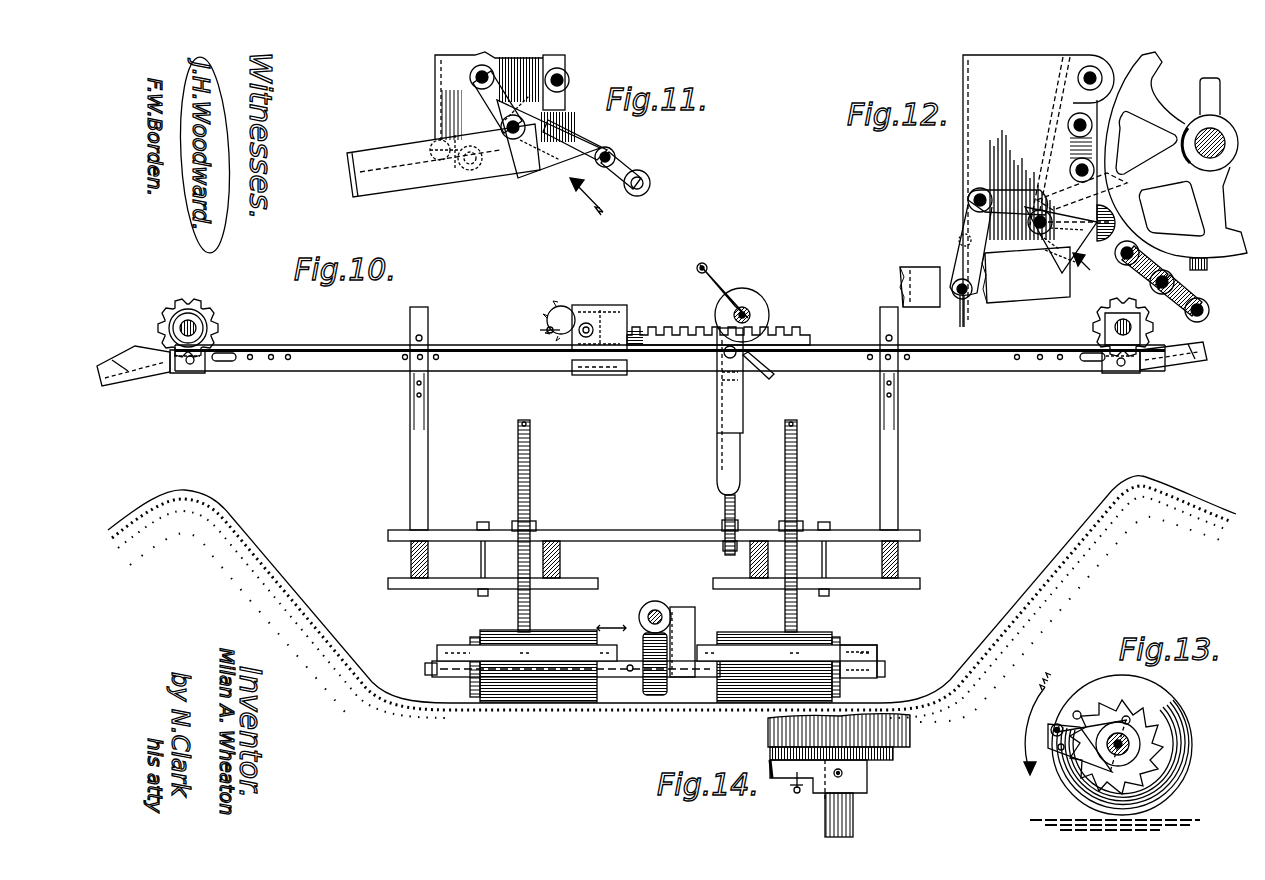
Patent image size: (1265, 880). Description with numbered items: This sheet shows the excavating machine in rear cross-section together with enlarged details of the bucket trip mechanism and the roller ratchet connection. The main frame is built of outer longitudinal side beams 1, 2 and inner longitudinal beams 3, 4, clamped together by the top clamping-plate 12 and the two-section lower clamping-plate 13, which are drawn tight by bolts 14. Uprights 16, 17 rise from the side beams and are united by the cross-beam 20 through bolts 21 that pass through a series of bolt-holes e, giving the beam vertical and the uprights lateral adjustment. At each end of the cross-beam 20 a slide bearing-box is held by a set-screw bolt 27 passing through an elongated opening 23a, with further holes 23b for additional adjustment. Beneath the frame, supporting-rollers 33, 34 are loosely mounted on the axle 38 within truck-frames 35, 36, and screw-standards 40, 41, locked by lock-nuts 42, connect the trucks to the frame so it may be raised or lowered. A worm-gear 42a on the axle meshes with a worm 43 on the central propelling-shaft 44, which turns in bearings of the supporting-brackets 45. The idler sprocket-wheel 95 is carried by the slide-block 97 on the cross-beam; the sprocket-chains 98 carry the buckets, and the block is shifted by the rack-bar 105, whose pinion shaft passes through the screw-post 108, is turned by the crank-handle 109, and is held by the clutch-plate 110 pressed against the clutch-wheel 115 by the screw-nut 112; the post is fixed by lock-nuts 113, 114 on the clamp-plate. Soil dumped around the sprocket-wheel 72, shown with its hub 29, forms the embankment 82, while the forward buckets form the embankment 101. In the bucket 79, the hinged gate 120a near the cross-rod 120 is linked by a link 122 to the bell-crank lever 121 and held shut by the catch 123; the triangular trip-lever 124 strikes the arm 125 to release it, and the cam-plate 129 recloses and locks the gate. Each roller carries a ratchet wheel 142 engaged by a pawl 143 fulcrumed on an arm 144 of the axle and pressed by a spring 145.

In FIG. 10, the outer longitudinal side beam 1 is at (409, 553).
In FIG. 10, the outer longitudinal side beam 2 is at (899, 566).
In FIG. 10, the inner longitudinal beam 3 is at (561, 563).
In FIG. 10, the inner longitudinal beam 4 is at (752, 562).
In FIG. 10, the top clamping-plate 12 is at (640, 531).
In FIG. 10, the lower clamping-plate 13 is at (596, 583).
In FIG. 10, the bolt 14 is at (482, 522).
In FIG. 10, the right upright post 16 is at (886, 437).
In FIG. 10, the upright 17 is at (428, 462).
In FIG. 10, the cross-beam 20 is at (330, 347).
In FIG. 10, the bolt 21 is at (422, 362).
In FIG. 10, the elongated opening 23a is at (232, 355).
In FIG. 10, the holes 23b is at (284, 362).
In FIG. 10, the set-screw bolt 27 is at (192, 362).
In FIG. 12, the hub shaft 29 is at (1205, 130).
In FIG. 10, the roller 33 is at (584, 631).
In FIG. 13, the roller 33 is at (1189, 738).
In FIG. 14, the roller 33 is at (908, 727).
In FIG. 10, the roller 34 is at (764, 632).
In FIG. 10, the truck-frame 35 is at (460, 646).
In FIG. 10, the truck-frame 36 is at (854, 650).
In FIG. 10, the shaft or axle 38 is at (430, 668).
In FIG. 13, the shaft or axle 38 is at (1140, 750).
In FIG. 14, the shaft or axle 38 is at (855, 820).
In FIG. 10, the screw-standard 40 is at (532, 488).
In FIG. 10, the screw-standard 41 is at (798, 470).
In FIG. 10, the lock-nut 42 is at (534, 526).
In FIG. 10, the worm-gear 42a is at (652, 697).
In FIG. 10, the worm 43 is at (654, 602).
In FIG. 10, the central propelling-shaft 44 is at (640, 616).
In FIG. 10, the supporting-bracket 45 is at (684, 612).
In FIG. 10, the sprocket-wheel 72 is at (210, 318).
In FIG. 12, the sprocket-wheel 72 is at (1222, 220).
In FIG. 11, the bucket 79 is at (455, 81).
In FIG. 12, the bucket 79 is at (1038, 191).
In FIG. 10, the embankment 82 is at (1058, 587).
In FIG. 10, the idler sprocket-wheel 95 is at (533, 330).
In FIG. 10, the slide-block 97 is at (618, 322).
In FIG. 11, the sprocket-chain 98 is at (648, 177).
In FIG. 12, the sprocket-chain 98 is at (1202, 303).
In FIG. 10, the embankment 101 is at (494, 590).
In FIG. 10, the rack-bar 105 is at (796, 332).
In FIG. 10, the screw-post 108 is at (717, 430).
In FIG. 10, the crank-handle 109 is at (714, 276).
In FIG. 10, the clutch-plate 110 is at (724, 350).
In FIG. 10, the screw-nut 112 is at (762, 370).
In FIG. 10, the lock-nut 113 is at (722, 527).
In FIG. 10, the lock-nut 114 is at (723, 548).
In FIG. 10, the clutch-wheel 115 is at (757, 308).
In FIG. 11, the cross-rod 120 is at (448, 176).
In FIG. 11, the hinged gate 120a is at (418, 236).
In FIG. 12, the hinged gate 120a is at (966, 312).
In FIG. 11, the bell-crank lever 121 is at (586, 142).
In FIG. 12, the bell-crank lever 121 is at (1108, 180).
In FIG. 11, the link 122 is at (475, 113).
In FIG. 12, the link 122 is at (965, 222).
In FIG. 11, the catch 123 is at (512, 180).
In FIG. 12, the catch 123 is at (1070, 263).
In FIG. 11, the triangular trip-lever 124 is at (522, 172).
In FIG. 12, the triangular trip-lever 124 is at (1090, 270).
In FIG. 11, the arm 125 is at (470, 172).
In FIG. 12, the arm 125 is at (1026, 275).
In FIG. 10, the cam-plate 129 is at (578, 307).
In FIG. 13, the ratchet plate or wheel 142 is at (1135, 722).
In FIG. 14, the ratchet plate or wheel 142 is at (895, 756).
In FIG. 13, the pawl 143 is at (1060, 762).
In FIG. 14, the pawl 143 is at (772, 752).
In FIG. 13, the arm 144 is at (1094, 725).
In FIG. 14, the arm 144 is at (822, 774).
In FIG. 13, the spring 145 is at (1050, 724).
In FIG. 14, the spring 145 is at (794, 790).
In FIG. 10, the bolt-holes e is at (404, 362).